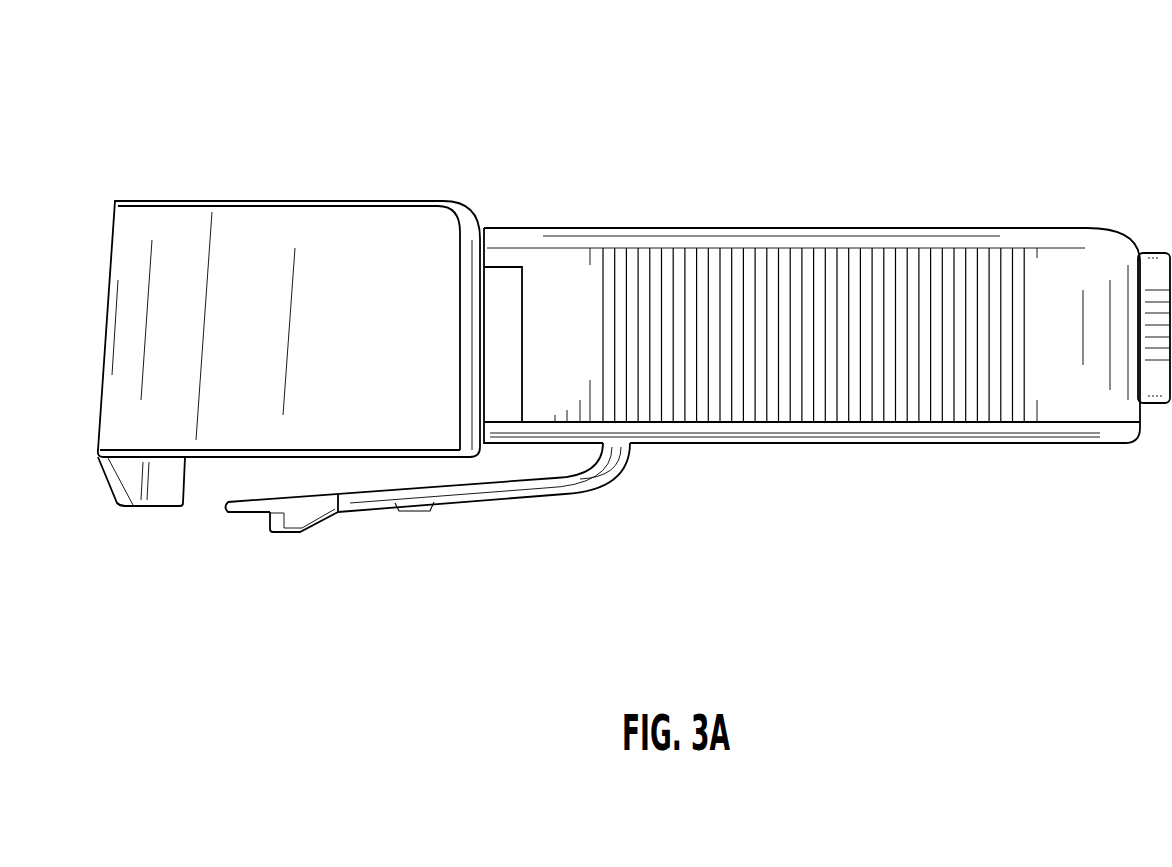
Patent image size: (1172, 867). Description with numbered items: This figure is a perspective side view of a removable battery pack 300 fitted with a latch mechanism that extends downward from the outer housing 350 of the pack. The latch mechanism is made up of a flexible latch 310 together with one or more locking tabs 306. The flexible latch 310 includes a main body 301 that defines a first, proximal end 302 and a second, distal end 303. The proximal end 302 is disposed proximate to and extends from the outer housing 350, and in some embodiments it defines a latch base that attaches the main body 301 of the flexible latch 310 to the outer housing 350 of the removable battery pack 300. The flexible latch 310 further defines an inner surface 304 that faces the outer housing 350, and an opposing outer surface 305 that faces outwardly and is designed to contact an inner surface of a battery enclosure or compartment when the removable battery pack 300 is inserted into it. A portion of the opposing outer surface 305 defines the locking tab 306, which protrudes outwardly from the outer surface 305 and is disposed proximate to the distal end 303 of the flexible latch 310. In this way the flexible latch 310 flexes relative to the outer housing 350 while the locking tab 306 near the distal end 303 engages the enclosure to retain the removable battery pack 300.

The removable battery pack 300 is at (146, 106).
The main body 301 is at (369, 538).
The proximal end 302 is at (630, 463).
The distal end 303 is at (228, 504).
The inner surface 304 is at (375, 487).
The opposing outer surface 305 is at (483, 501).
The locking tab 306 is at (280, 533).
The flexible latch 310 is at (567, 548).
The outer housing 350 is at (805, 444).